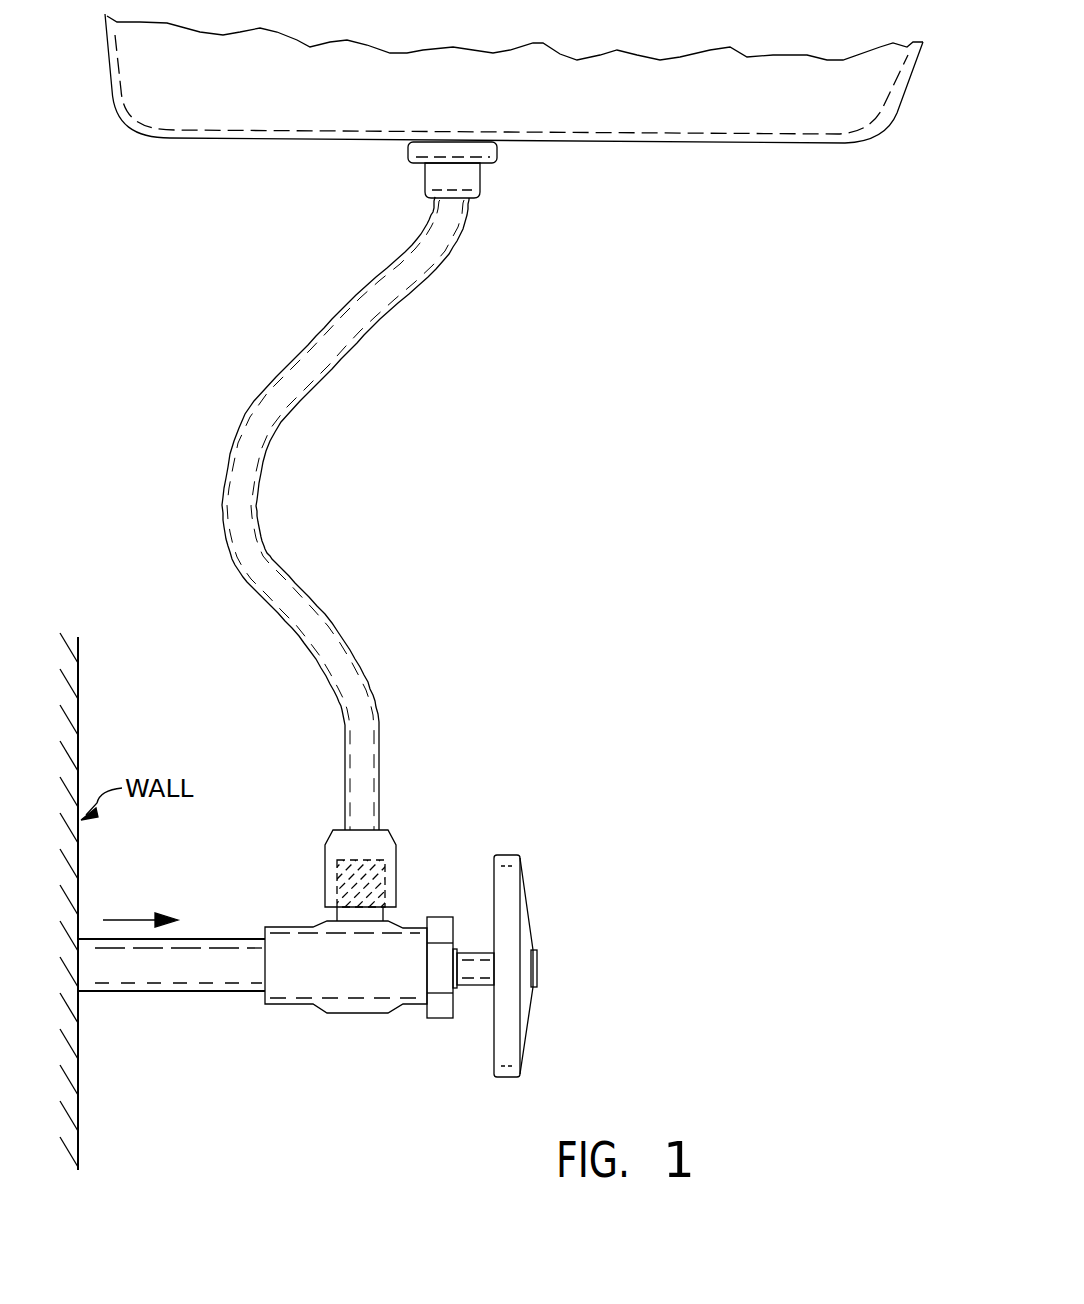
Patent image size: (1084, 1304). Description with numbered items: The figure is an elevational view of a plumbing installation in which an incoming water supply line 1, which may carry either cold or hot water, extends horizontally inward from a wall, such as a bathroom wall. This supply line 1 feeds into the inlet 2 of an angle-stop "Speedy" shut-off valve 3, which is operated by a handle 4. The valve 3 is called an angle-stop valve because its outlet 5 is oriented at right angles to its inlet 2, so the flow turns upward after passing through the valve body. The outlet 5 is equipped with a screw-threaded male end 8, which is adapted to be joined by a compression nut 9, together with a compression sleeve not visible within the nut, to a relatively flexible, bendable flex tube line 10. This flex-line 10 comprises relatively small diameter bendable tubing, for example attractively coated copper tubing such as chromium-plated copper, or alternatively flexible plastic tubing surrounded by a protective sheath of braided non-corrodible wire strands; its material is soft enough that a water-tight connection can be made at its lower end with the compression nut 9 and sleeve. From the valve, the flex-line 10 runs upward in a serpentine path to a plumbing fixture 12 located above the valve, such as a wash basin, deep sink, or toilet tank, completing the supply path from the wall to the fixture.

The incoming water supply line 1 is at (160, 976).
The inlet 2 is at (268, 968).
The angle-stop shut-off valve 3 is at (343, 988).
The handle 4 is at (535, 946).
The outlet 5 is at (390, 935).
The screw-threaded male end 8 is at (380, 868).
The compression nut 9 is at (331, 855).
The flex tube line 10 is at (265, 537).
The plumbing fixture 12 is at (650, 142).